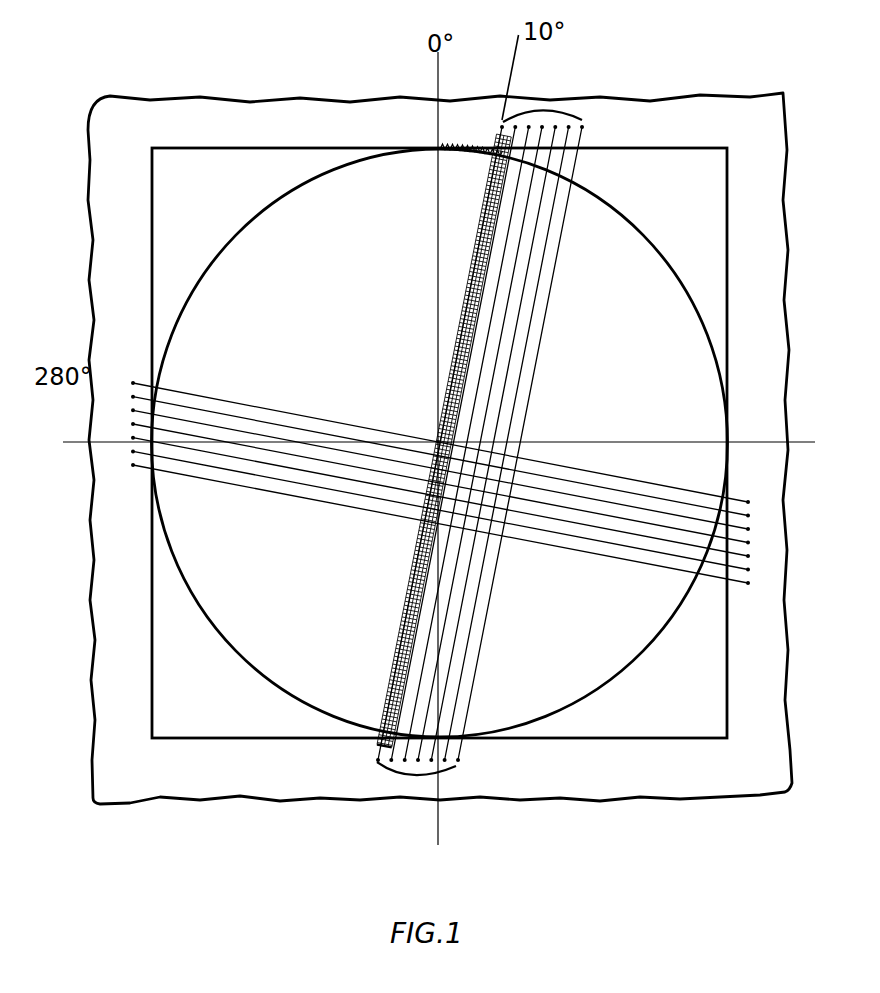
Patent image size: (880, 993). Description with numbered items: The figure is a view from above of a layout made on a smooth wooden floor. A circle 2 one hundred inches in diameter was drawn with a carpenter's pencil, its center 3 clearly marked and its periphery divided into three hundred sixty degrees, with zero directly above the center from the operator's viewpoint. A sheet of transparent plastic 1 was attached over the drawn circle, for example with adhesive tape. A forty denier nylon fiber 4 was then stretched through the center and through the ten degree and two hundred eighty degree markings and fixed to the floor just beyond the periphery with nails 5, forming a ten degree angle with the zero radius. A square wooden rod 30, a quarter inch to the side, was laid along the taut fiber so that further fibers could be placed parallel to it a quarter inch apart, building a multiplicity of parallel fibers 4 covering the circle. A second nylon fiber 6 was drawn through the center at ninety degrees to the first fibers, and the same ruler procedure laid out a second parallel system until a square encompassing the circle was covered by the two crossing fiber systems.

The sheet of transparent plastic 1 is at (310, 100).
The circle 2 is at (685, 287).
The center 3 is at (437, 440).
The nylon fiber 4 is at (460, 342).
The nails 5 is at (542, 105).
The nylon fiber 6 is at (247, 402).
The square wooden rod 30 is at (405, 605).